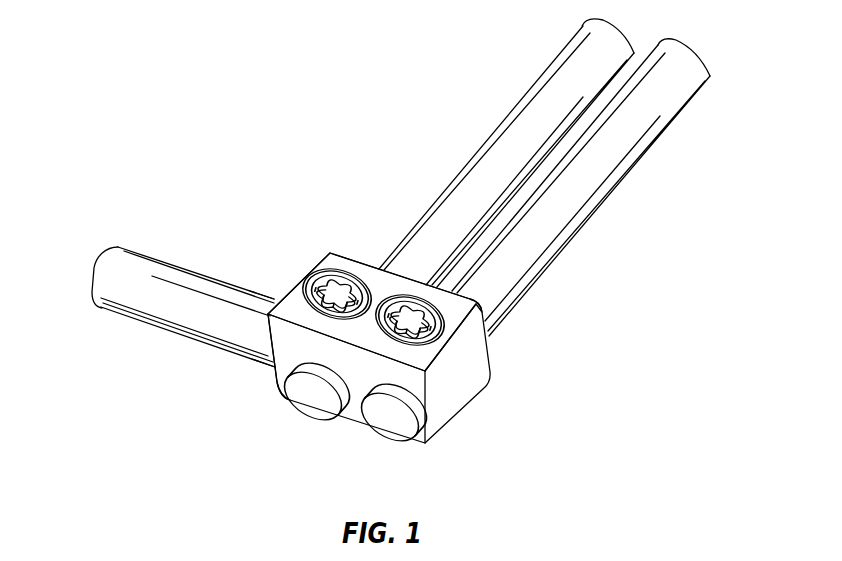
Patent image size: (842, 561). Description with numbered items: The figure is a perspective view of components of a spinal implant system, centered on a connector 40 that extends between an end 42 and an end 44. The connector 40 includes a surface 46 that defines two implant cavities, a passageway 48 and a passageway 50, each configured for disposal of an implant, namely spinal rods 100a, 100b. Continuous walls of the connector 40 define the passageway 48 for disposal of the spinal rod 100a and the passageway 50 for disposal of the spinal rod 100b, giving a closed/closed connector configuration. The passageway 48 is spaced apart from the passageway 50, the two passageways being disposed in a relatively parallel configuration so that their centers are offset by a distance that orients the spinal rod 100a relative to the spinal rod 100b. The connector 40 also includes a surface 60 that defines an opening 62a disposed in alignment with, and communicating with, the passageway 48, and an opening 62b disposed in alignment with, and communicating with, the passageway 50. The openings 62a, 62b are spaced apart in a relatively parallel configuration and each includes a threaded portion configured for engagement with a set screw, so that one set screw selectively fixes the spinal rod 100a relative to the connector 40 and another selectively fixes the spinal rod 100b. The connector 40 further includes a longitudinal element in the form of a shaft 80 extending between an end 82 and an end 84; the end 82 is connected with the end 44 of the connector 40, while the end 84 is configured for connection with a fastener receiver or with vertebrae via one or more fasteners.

The connector 40 is at (801, 88).
The end of connector 42 is at (465, 383).
The end of connector 44 is at (273, 377).
The surface 46 is at (423, 417).
The passageway 48 is at (426, 420).
The passageway 50 is at (353, 400).
The surface 60 is at (383, 282).
The opening 62a is at (440, 325).
The opening 62b is at (326, 268).
The shaft 80 is at (188, 280).
The end of shaft 82 is at (274, 306).
The end of shaft 84 is at (107, 257).
The spinal rod 100a is at (660, 116).
The spinal rod 100b is at (555, 62).